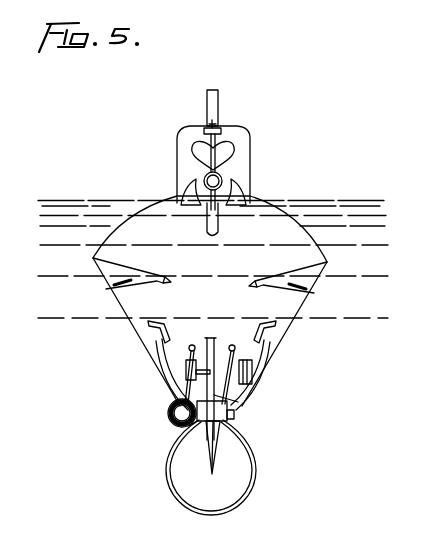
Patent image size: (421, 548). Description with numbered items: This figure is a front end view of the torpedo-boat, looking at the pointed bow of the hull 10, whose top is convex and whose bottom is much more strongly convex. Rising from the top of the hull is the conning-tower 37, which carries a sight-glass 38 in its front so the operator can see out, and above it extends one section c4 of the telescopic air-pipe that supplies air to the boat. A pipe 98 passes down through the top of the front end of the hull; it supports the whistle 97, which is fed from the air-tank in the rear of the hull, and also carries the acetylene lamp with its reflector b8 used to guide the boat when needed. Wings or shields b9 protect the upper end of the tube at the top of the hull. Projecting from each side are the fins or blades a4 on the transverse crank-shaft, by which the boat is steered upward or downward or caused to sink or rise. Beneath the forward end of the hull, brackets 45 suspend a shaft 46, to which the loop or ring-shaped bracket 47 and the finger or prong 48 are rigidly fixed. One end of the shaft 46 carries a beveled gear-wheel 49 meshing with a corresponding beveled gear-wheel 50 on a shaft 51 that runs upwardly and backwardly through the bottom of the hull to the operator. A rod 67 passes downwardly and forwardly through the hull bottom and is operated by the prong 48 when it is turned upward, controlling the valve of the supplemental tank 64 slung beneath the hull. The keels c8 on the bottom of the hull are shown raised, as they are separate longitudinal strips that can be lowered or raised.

The hull 10 is at (293, 231).
The air-pipe section c4 is at (218, 103).
The whistle 97 is at (221, 131).
The conning-tower 37 is at (250, 159).
The sight-glass 38 is at (193, 152).
The reflector b8 is at (222, 179).
The pipe 98 is at (186, 196).
The wings or shields b9 is at (244, 197).
The fins or blades a4 is at (110, 290).
The brackets 45 is at (208, 340).
The keels c8 is at (186, 371).
The shaft 51 is at (191, 345).
The rod 67 is at (234, 352).
The beveled gear-wheel 50 is at (172, 405).
The shaft 46 is at (233, 420).
The supplemental tank 64 is at (252, 400).
The beveled gear-wheel 49 is at (190, 427).
The finger or prong 48 is at (206, 440).
The loop or ring-shaped bracket 47 is at (257, 465).